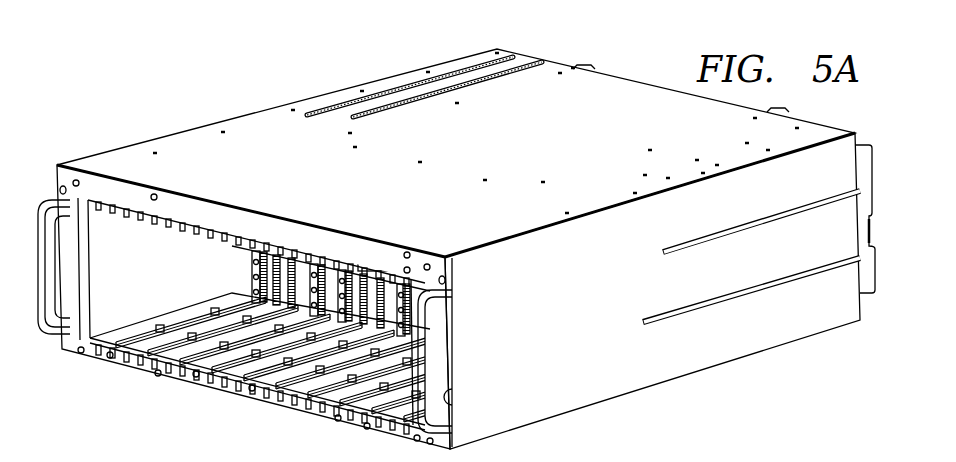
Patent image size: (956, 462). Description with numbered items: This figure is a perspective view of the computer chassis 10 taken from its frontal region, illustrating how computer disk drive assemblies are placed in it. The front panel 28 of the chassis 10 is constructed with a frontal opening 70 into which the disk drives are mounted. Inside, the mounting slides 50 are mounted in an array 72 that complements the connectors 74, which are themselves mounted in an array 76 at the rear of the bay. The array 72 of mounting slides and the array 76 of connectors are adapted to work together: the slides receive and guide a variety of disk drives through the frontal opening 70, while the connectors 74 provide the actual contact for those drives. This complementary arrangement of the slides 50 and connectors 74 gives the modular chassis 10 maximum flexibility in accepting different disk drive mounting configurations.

The chassis 10 is at (606, 60).
The front panel 28 is at (113, 192).
The mounting slides 50 is at (242, 357).
The frontal opening 70 is at (74, 380).
The array of mounting slides 72 is at (182, 271).
The connectors 74 is at (249, 262).
The array of connectors 76 is at (315, 249).